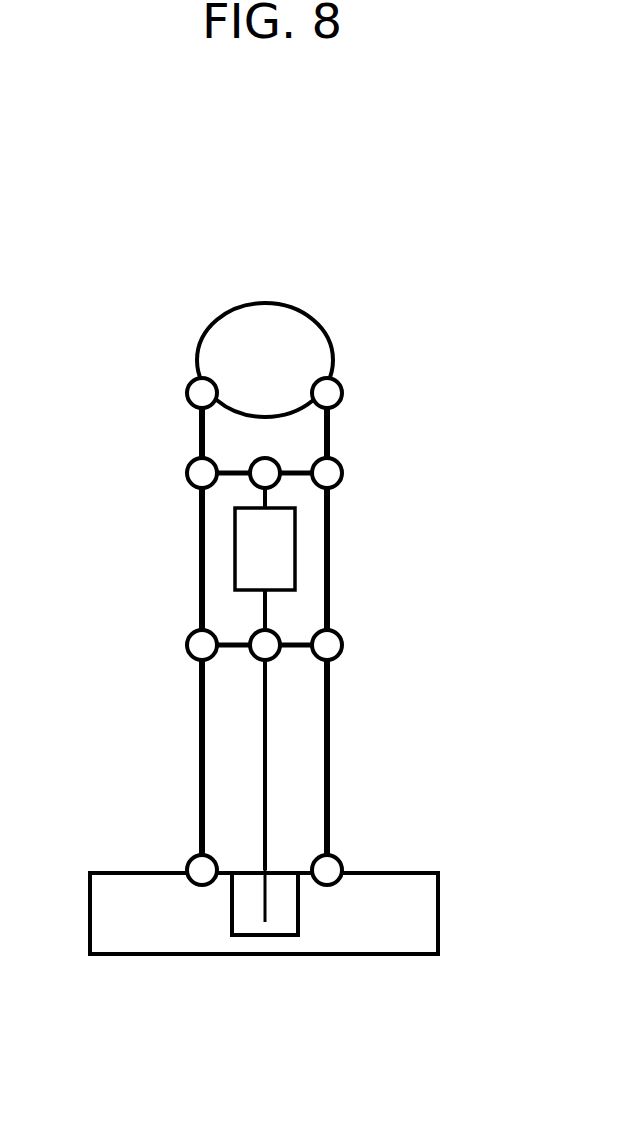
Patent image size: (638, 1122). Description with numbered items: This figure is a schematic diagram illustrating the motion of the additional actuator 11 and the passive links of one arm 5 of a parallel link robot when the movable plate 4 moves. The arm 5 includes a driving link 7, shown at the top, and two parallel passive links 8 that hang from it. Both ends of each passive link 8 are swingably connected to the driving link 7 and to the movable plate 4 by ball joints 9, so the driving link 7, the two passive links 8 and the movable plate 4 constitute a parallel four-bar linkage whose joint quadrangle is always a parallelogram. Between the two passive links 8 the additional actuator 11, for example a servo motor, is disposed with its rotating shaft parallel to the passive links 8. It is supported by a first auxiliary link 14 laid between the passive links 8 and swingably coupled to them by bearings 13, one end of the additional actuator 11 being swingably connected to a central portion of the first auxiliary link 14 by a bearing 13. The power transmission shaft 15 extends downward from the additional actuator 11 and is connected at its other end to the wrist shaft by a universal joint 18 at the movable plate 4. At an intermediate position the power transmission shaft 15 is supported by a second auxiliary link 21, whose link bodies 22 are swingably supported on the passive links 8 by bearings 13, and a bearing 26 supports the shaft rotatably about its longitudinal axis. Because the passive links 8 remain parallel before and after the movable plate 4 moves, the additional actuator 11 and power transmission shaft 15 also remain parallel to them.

The movable plate 4 is at (198, 955).
The arm 5 is at (92, 292).
The driving link 7 is at (262, 303).
The passive link 8 is at (199, 718).
The ball joint 9 is at (187, 393).
The additional actuator 11 is at (295, 542).
The bearing 13 is at (187, 474).
The first auxiliary link 14 is at (235, 477).
The power transmission shaft 15 is at (267, 788).
The universal joint 18 is at (255, 853).
The second auxiliary link 21 is at (298, 649).
The link body 22 is at (228, 652).
The bearing 26 is at (274, 632).